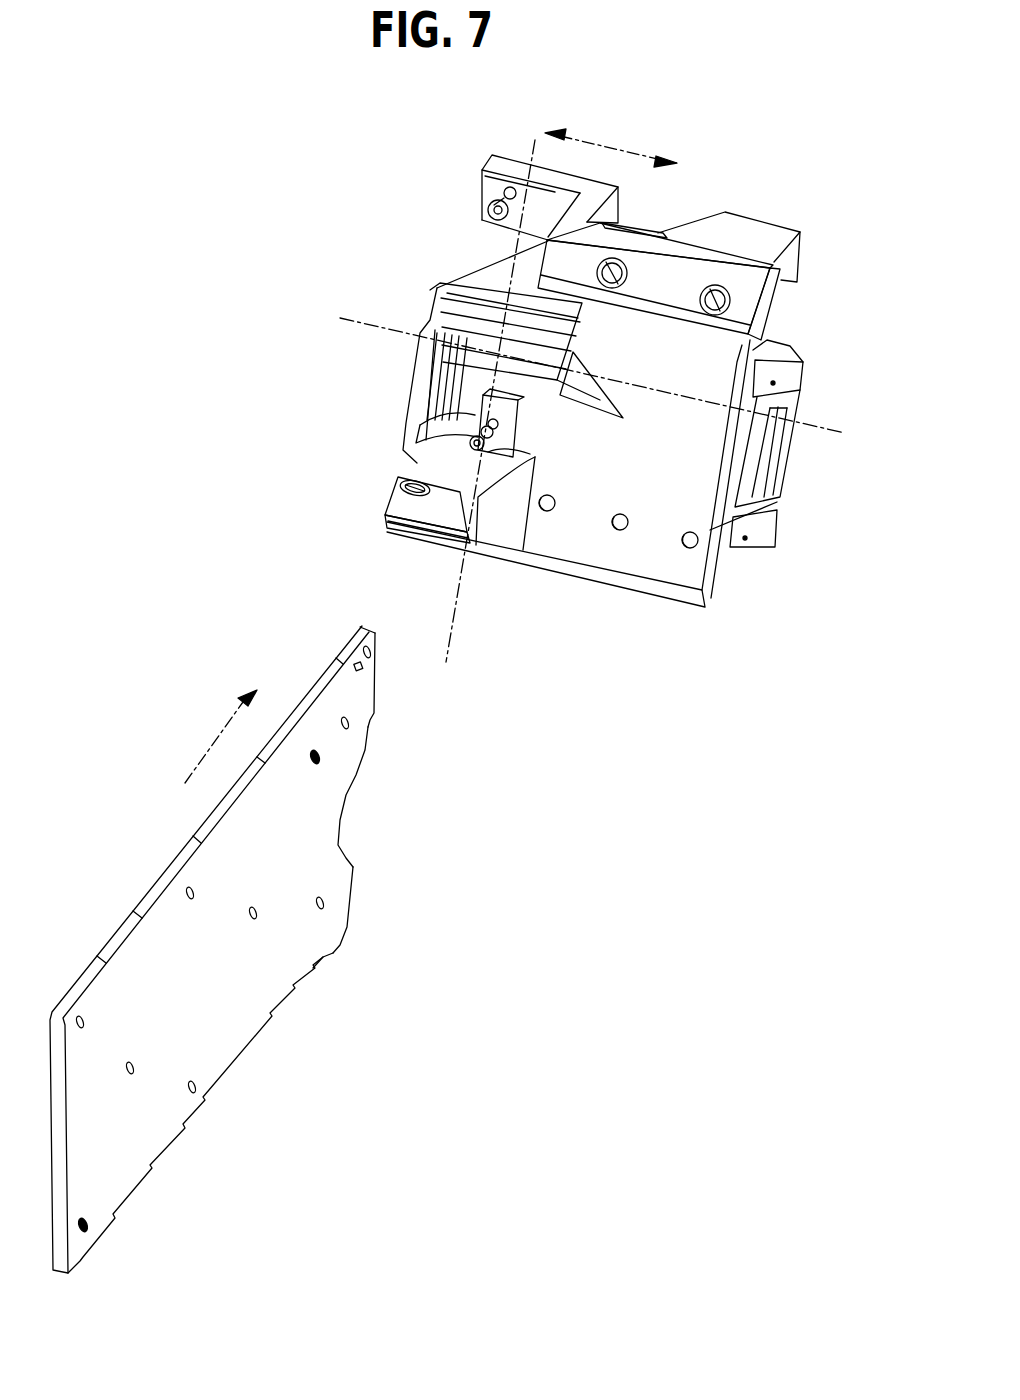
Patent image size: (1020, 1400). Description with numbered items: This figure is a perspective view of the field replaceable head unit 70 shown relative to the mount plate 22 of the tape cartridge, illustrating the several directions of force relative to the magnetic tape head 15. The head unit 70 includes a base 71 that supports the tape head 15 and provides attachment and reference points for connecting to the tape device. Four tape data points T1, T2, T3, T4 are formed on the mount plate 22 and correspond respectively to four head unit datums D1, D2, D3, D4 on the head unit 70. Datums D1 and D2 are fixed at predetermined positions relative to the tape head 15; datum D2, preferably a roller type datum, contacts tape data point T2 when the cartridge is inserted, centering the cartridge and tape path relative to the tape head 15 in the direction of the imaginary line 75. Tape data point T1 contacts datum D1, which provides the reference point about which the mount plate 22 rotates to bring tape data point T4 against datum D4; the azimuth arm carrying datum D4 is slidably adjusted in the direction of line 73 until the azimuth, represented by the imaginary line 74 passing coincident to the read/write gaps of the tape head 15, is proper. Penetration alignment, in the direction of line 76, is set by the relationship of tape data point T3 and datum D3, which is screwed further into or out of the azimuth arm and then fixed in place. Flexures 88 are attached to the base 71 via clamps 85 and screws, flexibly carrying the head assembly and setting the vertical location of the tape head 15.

The head unit 70 is at (752, 95).
The line indicating azimuth adjustment direction 73 is at (617, 137).
The clamps 85 is at (745, 212).
The datum D4 is at (496, 196).
The datum D3 is at (487, 217).
The tape head 15 is at (483, 362).
The datum D1 is at (428, 447).
The datum D2 is at (468, 488).
The imaginary line representing azimuth alignment 74 is at (837, 430).
The imaginary line indicating centering direction 75 is at (452, 623).
The flexures 88 is at (788, 473).
The base 71 is at (712, 598).
The line indicating penetration direction 76 is at (222, 735).
The mount plate 22 is at (173, 850).
The tape data point T1 is at (338, 908).
The tape data point T2 is at (323, 957).
The tape data point T3 is at (375, 678).
The tape data point T4 is at (355, 698).